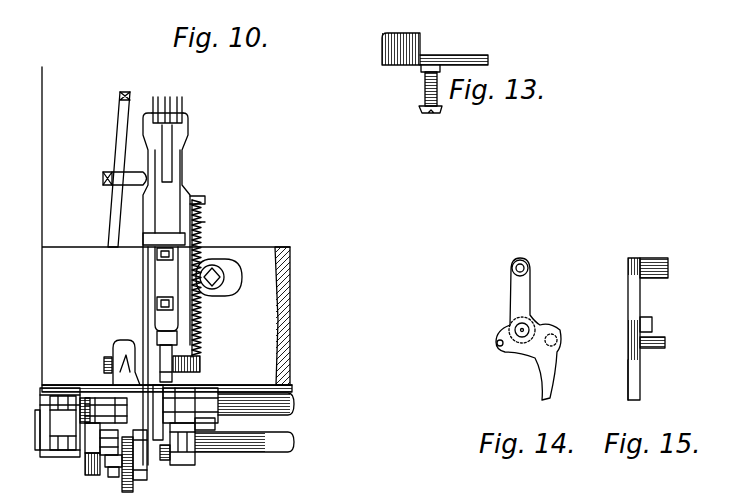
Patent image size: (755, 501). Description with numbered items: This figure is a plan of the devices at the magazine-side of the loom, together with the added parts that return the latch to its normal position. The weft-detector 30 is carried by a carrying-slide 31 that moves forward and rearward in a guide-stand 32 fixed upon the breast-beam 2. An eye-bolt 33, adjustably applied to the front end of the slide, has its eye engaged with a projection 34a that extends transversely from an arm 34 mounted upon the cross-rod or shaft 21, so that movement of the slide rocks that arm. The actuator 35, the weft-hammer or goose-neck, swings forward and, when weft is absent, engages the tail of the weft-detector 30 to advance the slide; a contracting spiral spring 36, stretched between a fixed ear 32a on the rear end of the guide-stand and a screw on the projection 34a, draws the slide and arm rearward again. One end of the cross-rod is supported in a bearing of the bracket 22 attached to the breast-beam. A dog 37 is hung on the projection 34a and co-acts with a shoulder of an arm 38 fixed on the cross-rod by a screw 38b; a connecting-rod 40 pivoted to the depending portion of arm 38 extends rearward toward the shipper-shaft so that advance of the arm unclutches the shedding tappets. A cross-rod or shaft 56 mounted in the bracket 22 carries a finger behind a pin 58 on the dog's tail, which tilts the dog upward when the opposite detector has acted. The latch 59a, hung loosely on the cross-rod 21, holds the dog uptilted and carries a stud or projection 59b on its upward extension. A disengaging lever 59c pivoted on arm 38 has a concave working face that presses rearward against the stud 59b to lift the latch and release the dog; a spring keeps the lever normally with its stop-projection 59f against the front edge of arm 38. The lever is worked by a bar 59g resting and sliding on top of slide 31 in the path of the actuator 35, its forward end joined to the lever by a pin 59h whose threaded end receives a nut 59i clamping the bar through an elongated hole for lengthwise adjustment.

In FIG. 10, the breast-beam 2 is at (288, 368).
In FIG. 10, the cross-rod or shaft 21 is at (296, 408).
In FIG. 10, the bracket 22 is at (57, 455).
In FIG. 10, the weft-detector 30 is at (186, 99).
In FIG. 10, the carrying-slide 31 is at (196, 160).
In FIG. 10, the guide-stand 32 is at (206, 241).
In FIG. 10, the fixed ear 32a is at (208, 200).
In FIG. 10, the eye-bolt 33 is at (178, 381).
In FIG. 10, the arm 34 is at (162, 396).
In FIG. 10, the projection 34a is at (206, 362).
In FIG. 10, the actuator 35 is at (107, 185).
In FIG. 10, the contracting spiral spring 36 is at (208, 226).
In FIG. 10, the dog 37 is at (109, 398).
In FIG. 10, the arm 38 is at (134, 487).
In FIG. 10, the screw 38b is at (80, 472).
In FIG. 10, the connecting-rod 40 is at (104, 236).
In FIG. 10, the cross-rod or shaft 56 is at (258, 450).
In FIG. 10, the pin 58 is at (191, 468).
In FIG. 13, the latch 59a is at (494, 61).
In FIG. 10, the stud or projection 59b is at (50, 425).
In FIG. 13, the stud or projection 59b is at (440, 114).
In FIG. 10, the disengaging lever 59c is at (100, 468).
In FIG. 14, the disengaging lever 59c is at (561, 377).
In FIG. 15, the disengaging lever 59c is at (624, 368).
In FIG. 10, the stop-projection 59f is at (117, 463).
In FIG. 15, the stop-projection 59f is at (663, 354).
In FIG. 10, the bar 59g is at (146, 299).
In FIG. 10, the pin 59h is at (134, 403).
In FIG. 10, the nut 59i is at (208, 429).